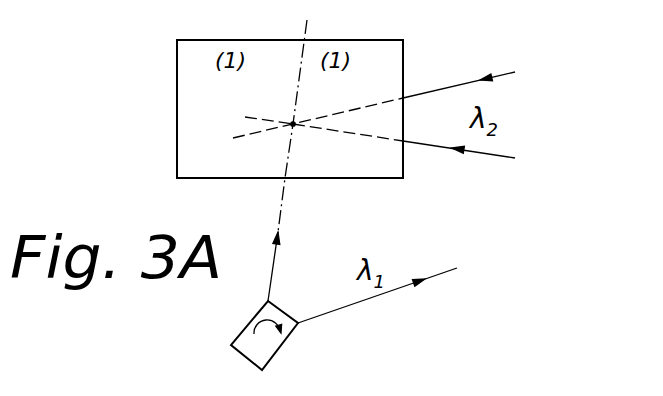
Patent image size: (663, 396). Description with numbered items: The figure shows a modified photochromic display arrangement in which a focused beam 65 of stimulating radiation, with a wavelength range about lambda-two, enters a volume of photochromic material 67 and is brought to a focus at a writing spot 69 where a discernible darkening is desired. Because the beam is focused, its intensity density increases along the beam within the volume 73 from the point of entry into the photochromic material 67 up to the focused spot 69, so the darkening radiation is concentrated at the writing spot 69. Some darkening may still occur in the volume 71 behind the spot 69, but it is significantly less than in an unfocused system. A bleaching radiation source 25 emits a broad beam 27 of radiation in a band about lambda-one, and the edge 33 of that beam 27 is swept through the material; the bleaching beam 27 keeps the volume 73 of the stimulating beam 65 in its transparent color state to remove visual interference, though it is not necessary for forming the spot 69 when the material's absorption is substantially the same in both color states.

The bleaching radiation source 25 is at (268, 355).
The bleaching radiation beam 27 is at (332, 307).
The edge of the radiation beam 33 is at (291, 126).
The focused beam 65 is at (423, 95).
The photochromic material 67 is at (405, 51).
The writing spot 69 is at (292, 122).
The volume behind the spot 71 is at (242, 113).
The volume of the beam 73 is at (357, 125).